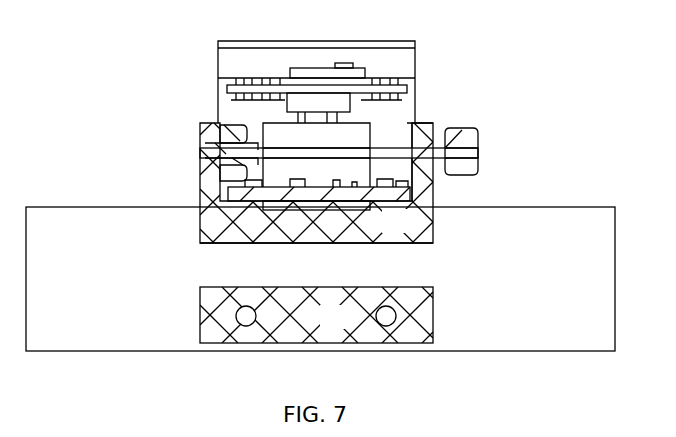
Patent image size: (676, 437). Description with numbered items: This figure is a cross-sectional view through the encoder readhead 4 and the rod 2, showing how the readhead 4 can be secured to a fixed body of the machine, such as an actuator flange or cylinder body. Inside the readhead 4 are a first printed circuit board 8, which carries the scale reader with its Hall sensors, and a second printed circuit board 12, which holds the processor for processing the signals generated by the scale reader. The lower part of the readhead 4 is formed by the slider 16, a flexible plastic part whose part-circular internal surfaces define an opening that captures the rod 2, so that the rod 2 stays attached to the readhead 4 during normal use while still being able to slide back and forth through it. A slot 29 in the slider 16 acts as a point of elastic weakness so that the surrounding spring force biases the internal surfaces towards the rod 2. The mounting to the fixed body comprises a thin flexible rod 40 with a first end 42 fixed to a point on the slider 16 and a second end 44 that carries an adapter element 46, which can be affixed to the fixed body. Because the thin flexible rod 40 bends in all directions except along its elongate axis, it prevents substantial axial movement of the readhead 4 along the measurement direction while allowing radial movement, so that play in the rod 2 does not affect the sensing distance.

The rod 2 is at (535, 230).
The encoder readhead 4 is at (367, 42).
The first printed circuit board 8 is at (408, 198).
The second printed circuit board 12 is at (249, 92).
The slider 16 is at (232, 124).
The slot 29 is at (381, 244).
The thin flexible rod 40 is at (395, 146).
The first end 42 is at (210, 151).
The second end 44 is at (478, 151).
The adapter element 46 is at (447, 148).